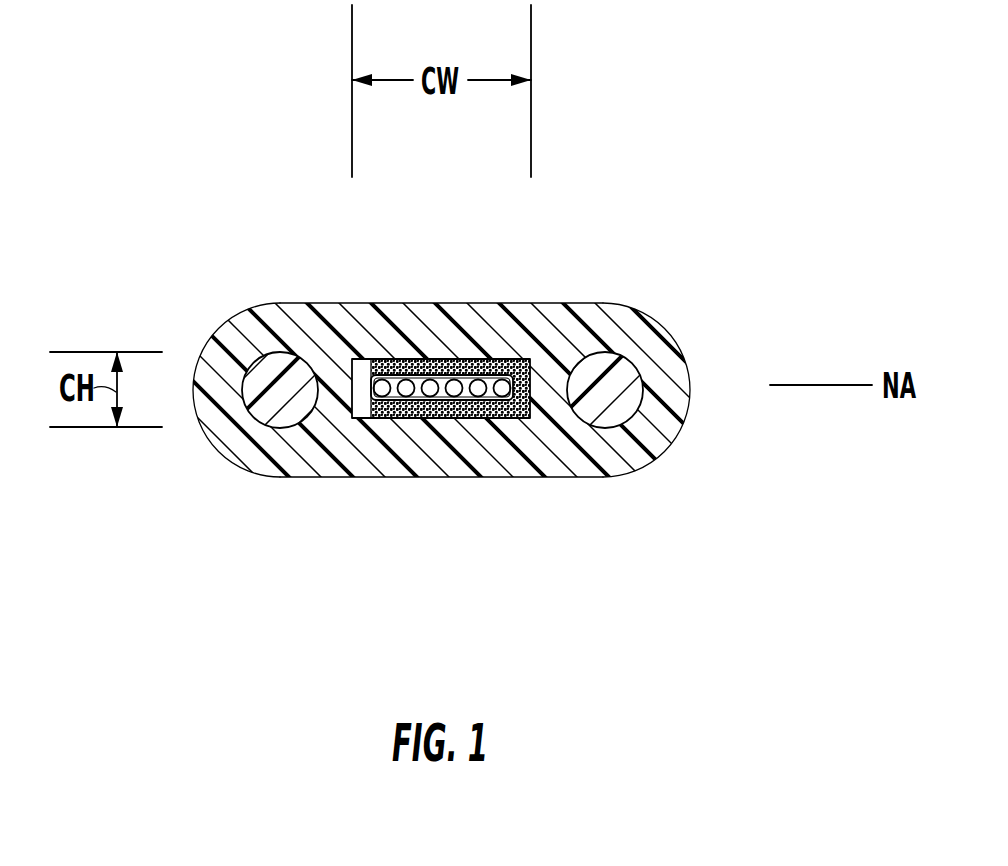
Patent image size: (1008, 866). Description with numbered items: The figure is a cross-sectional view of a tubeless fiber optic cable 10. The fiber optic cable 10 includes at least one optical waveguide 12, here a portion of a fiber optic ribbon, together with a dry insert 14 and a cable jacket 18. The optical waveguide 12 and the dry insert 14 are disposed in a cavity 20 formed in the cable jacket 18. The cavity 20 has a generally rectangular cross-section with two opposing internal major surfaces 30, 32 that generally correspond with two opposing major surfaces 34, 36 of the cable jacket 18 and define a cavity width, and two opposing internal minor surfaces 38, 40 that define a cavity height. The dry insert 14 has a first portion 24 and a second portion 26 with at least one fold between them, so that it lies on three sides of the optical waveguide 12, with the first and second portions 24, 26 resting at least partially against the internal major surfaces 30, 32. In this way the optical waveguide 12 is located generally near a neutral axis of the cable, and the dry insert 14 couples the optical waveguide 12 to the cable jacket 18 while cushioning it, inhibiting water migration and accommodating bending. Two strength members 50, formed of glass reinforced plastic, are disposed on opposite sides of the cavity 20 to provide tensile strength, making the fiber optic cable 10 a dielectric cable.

The fiber optic cable 10 is at (442, 375).
The optical waveguide 12 is at (466, 477).
The dry insert 14 is at (510, 358).
The cable jacket 18 is at (281, 318).
The cavity 20 is at (316, 427).
The first portion 24 is at (398, 363).
The second portion 26 is at (370, 418).
The internal major surface 30 is at (468, 352).
The internal major surface 32 is at (468, 418).
The major surface 34 is at (578, 312).
The major surface 36 is at (580, 472).
The internal minor surface 38 is at (367, 397).
The internal minor surface 40 is at (558, 350).
The strength member 50 is at (265, 408).